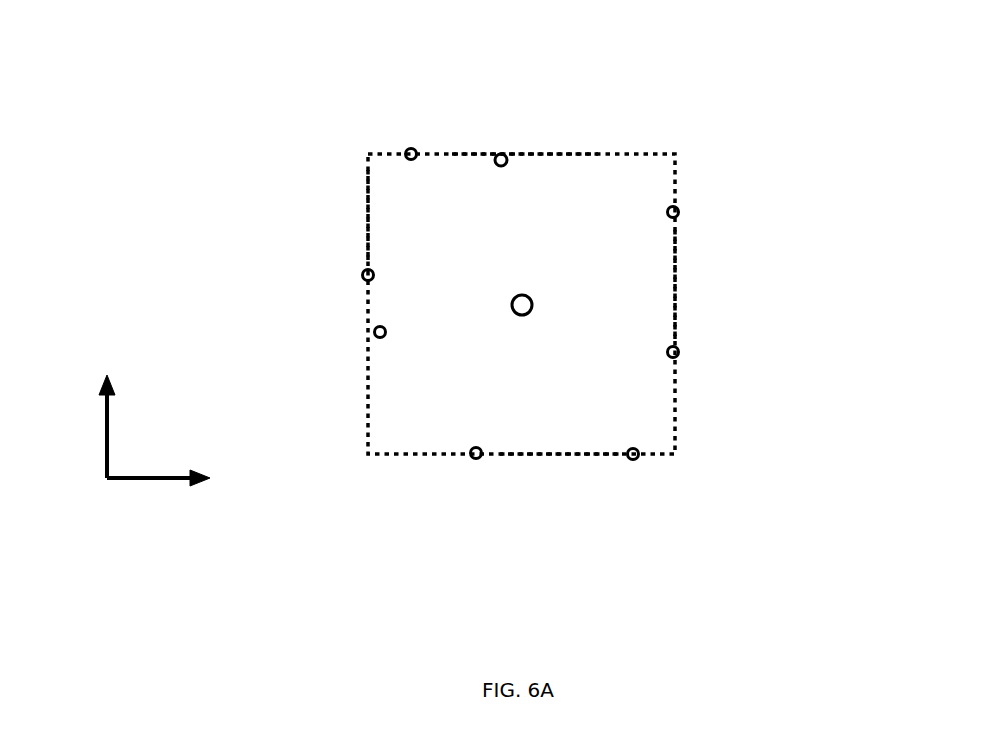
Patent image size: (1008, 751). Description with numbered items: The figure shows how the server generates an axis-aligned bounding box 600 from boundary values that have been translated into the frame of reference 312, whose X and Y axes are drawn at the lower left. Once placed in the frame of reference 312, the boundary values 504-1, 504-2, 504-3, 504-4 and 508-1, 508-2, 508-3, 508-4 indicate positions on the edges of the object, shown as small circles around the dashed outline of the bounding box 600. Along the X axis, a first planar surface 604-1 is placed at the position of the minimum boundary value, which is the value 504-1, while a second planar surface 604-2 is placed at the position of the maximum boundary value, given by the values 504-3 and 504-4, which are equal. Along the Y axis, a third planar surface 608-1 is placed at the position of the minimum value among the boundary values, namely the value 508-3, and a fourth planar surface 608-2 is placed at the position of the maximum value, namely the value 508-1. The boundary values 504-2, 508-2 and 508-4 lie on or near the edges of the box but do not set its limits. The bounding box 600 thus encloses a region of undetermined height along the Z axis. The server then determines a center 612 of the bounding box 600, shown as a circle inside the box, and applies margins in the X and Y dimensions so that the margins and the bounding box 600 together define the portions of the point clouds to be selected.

The axis-aligned bounding box 600 is at (676, 154).
The center 612 is at (530, 297).
The boundary value 508-1 is at (411, 148).
The boundary value 508-2 is at (476, 459).
The boundary value 508-3 is at (634, 460).
The boundary value 508-4 is at (501, 154).
The boundary value 504-1 is at (362, 275).
The boundary value 504-2 is at (373, 332).
The boundary value 504-3 is at (680, 352).
The boundary value 504-4 is at (680, 212).
The first planar surface 604-1 is at (367, 222).
The second planar surface 604-2 is at (676, 288).
The third planar surface 608-1 is at (563, 455).
The fourth planar surface 608-2 is at (598, 153).
The frame of reference 312 is at (117, 480).